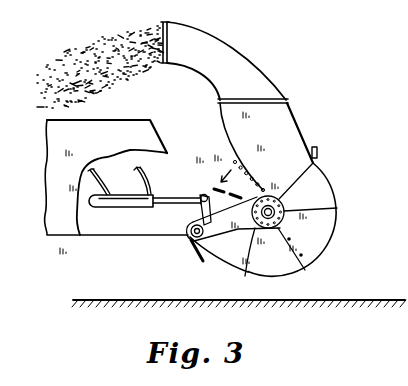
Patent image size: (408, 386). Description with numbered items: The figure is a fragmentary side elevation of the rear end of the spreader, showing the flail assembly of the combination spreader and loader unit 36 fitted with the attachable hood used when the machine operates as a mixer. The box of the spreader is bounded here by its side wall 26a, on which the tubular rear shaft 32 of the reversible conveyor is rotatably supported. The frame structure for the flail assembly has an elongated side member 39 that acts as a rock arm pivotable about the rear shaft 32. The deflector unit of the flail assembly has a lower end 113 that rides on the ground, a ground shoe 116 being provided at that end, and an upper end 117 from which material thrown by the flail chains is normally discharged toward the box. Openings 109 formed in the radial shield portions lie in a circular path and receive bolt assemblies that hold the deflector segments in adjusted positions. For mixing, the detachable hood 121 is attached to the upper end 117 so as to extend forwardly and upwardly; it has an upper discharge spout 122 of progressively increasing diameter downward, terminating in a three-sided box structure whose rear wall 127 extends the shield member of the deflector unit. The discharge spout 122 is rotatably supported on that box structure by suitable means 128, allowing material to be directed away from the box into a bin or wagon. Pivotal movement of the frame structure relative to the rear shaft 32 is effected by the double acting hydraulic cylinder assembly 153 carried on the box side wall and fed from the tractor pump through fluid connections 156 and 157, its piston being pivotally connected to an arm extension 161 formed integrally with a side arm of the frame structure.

The side wall 26a is at (150, 128).
The discharge spout 122 is at (215, 50).
The rotatable support means 128 is at (287, 99).
The detachable hood 121 is at (306, 121).
The rear wall 127 is at (305, 142).
The upper end of deflector unit 117 is at (302, 180).
The openings 109 is at (337, 208).
The combination spreader and loader unit 36 is at (336, 248).
The side member 39 is at (224, 266).
The lower end of deflector unit 113 is at (218, 247).
The rear shaft 32 is at (194, 236).
The ground shoe 116 is at (199, 259).
The double acting hydraulic cylinder assembly 153 is at (122, 207).
The fluid connection 156 is at (123, 172).
The fluid connection 157 is at (148, 176).
The arm extension 161 is at (197, 212).